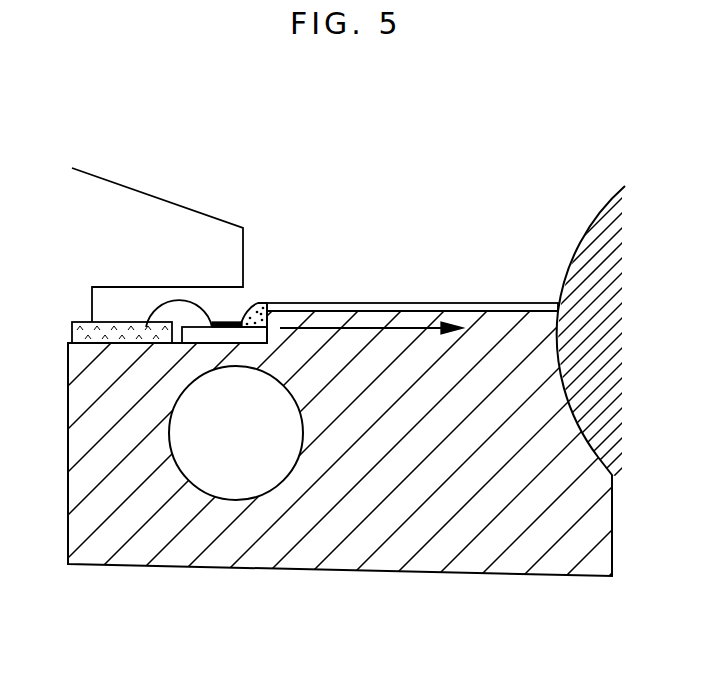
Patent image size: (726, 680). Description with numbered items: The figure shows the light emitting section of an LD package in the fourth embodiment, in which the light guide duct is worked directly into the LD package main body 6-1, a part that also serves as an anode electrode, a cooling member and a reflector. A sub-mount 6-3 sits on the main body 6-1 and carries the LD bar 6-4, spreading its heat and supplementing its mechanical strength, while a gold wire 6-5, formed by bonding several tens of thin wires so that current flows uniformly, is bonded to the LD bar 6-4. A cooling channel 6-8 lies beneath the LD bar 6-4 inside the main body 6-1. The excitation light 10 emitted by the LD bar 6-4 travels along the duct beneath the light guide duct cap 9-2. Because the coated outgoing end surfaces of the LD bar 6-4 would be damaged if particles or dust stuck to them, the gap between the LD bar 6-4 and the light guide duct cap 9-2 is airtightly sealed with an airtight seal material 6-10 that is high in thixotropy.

The LD package main body 6-1 is at (350, 573).
The sub-mount 6-3 is at (196, 327).
The LD bar 6-4 is at (225, 322).
The gold wire 6-5 is at (167, 298).
The cooling channel 6-8 is at (212, 465).
The airtight seal material 6-10 is at (263, 298).
The light guide duct cap 9-2 is at (440, 300).
The excitation light 10 is at (345, 327).